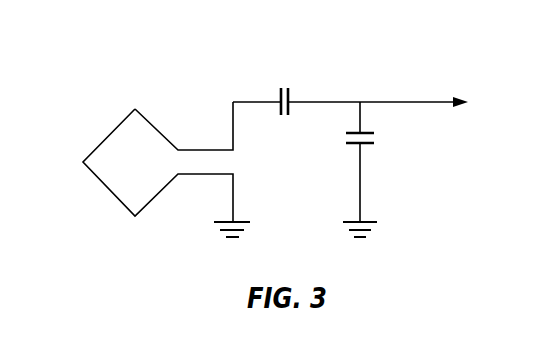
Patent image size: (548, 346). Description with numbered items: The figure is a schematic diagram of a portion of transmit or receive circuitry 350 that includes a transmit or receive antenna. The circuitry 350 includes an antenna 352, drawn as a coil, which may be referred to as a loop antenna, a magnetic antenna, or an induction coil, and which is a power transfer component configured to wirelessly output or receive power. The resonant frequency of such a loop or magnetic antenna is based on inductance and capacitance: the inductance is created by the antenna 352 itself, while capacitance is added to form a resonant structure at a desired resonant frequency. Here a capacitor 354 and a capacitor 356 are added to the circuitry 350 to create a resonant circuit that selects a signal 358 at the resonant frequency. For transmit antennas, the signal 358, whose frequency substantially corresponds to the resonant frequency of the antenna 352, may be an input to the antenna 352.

The transmit or receive circuitry 350 is at (154, 74).
The antenna 352 is at (108, 135).
The capacitor 354 is at (290, 99).
The capacitor 356 is at (363, 145).
The signal 358 is at (393, 101).